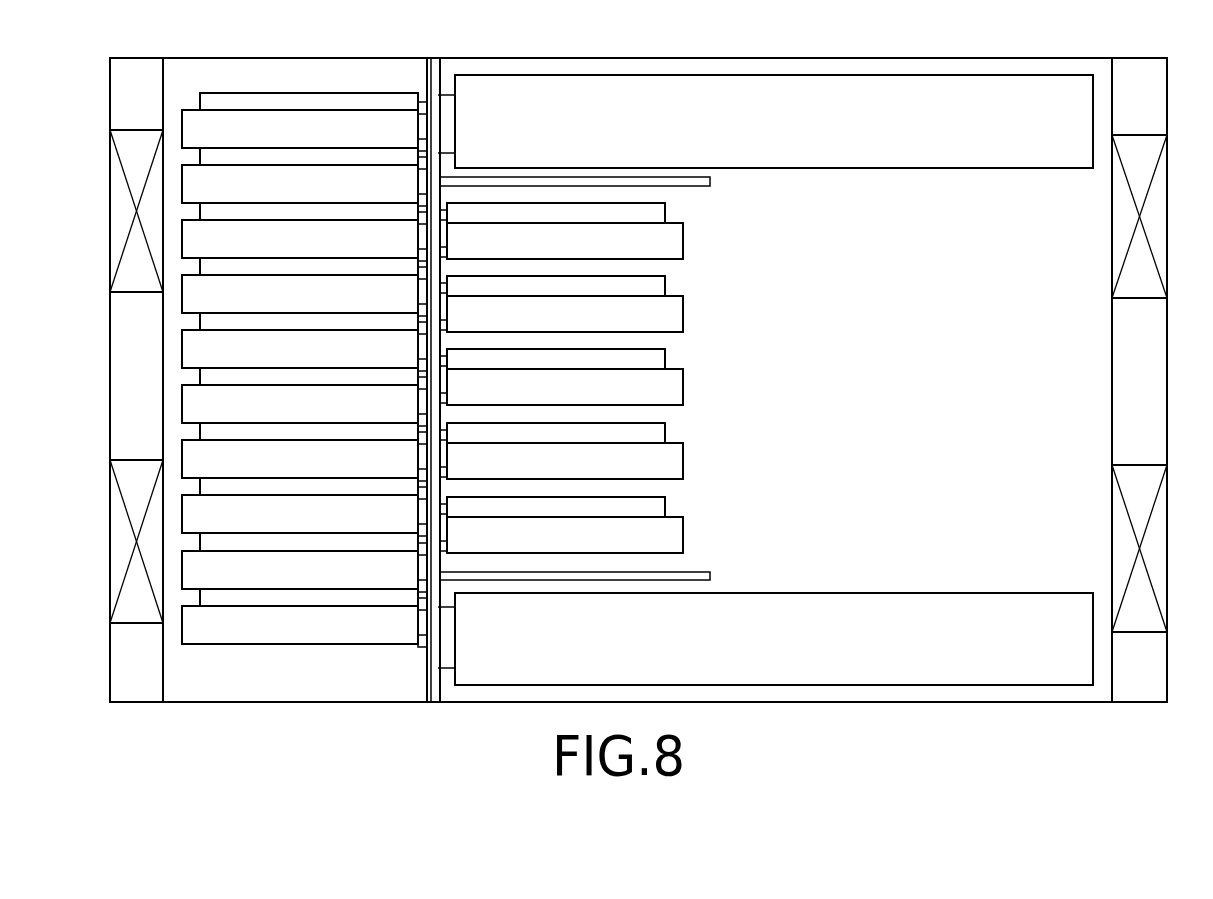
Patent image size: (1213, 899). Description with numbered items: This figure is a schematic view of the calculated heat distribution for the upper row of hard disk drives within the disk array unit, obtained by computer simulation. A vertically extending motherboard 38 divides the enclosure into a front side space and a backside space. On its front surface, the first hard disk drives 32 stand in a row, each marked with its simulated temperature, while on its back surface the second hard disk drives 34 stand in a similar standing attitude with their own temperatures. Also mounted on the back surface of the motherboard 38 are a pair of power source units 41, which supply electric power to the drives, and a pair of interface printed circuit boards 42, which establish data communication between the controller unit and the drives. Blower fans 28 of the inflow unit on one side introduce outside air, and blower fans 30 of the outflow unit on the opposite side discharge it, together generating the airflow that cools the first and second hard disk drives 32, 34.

The blower fans 28 is at (110, 147).
The blower fans 30 is at (1112, 239).
The first hard disk drives 32 is at (182, 122).
The second hard disk drives 34 is at (683, 313).
The motherboard 38 is at (431, 63).
The power source units 41 is at (890, 170).
The interface printed circuit boards 42 is at (710, 182).